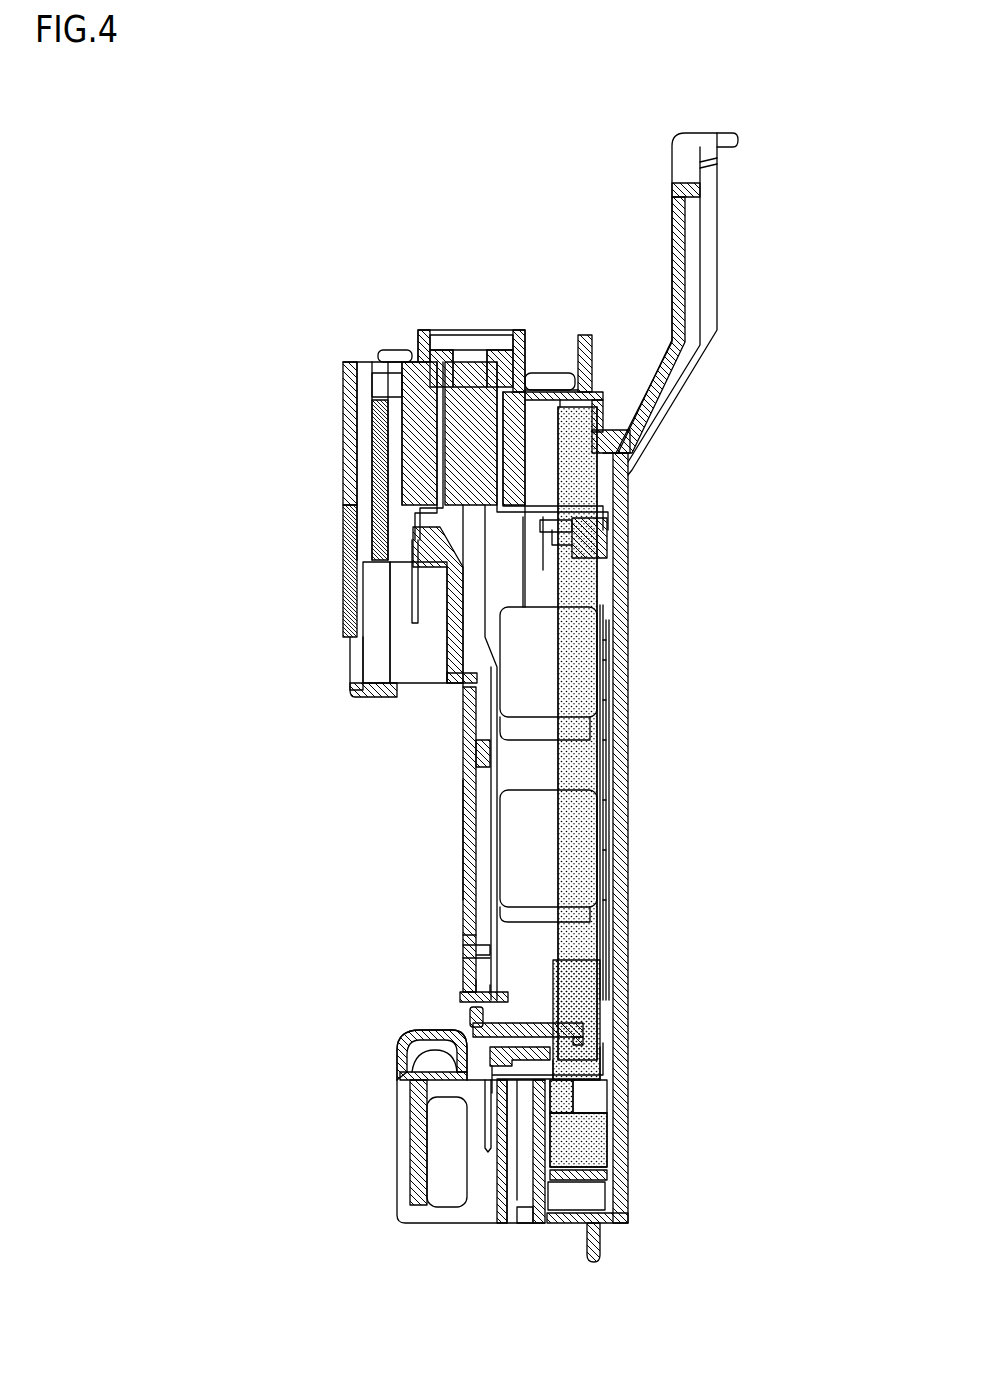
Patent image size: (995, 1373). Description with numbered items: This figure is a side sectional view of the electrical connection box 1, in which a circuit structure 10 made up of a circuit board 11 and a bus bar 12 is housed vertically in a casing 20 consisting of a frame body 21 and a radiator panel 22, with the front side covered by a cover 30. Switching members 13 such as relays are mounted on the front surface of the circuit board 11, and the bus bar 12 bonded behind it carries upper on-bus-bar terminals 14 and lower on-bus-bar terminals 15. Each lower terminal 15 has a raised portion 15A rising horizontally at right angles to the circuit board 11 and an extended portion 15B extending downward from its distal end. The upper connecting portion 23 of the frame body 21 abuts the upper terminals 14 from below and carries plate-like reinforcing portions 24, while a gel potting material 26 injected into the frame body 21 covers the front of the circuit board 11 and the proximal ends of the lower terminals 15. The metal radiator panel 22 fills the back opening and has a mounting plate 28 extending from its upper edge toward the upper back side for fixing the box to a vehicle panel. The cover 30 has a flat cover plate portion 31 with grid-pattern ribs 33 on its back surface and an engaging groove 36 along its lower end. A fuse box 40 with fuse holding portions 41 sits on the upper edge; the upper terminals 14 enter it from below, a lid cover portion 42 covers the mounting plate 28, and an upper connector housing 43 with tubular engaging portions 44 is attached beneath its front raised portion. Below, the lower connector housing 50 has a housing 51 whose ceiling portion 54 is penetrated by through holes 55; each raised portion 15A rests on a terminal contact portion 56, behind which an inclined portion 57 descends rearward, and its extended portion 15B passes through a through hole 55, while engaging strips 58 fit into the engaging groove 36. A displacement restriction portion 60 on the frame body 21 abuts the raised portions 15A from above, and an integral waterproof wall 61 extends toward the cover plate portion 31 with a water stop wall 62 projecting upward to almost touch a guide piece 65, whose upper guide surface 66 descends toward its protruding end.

The electrical connection box 1 is at (305, 162).
The circuit structure 10 is at (550, 733).
The circuit board 11 is at (610, 772).
The bus bar 12 is at (612, 815).
The switching members 13 is at (540, 860).
The upper on-bus-bar terminals 14 is at (545, 515).
The lower on-bus-bar terminals 15 is at (647, 1065).
The raised portion 15A is at (570, 1085).
The extended portion 15B is at (560, 1140).
The casing 20 is at (652, 1216).
The frame body 21 is at (600, 1250).
The radiator panel 22 is at (617, 1197).
The upper connecting portion 23 is at (540, 548).
The reinforcing portions 24 is at (612, 578).
The potting material 26 is at (580, 950).
The mounting plate 28 is at (700, 306).
The cover 30 is at (462, 745).
The cover plate portion 31 is at (465, 841).
The ribs 33 is at (477, 950).
The engaging groove 36 is at (425, 1070).
The fuse box 40 is at (412, 385).
The fuse holding portions 41 is at (490, 385).
The lid cover portion 42 is at (676, 304).
The upper connector housing 43 is at (345, 575).
The tubular engaging portions 44 is at (360, 694).
The lower connector housing 50 is at (410, 1176).
The housing 51 is at (515, 1207).
The ceiling portion 54 is at (435, 1082).
The through holes 55 is at (482, 1090).
The terminal contact portion 56 is at (530, 1097).
The inclined portion 57 is at (485, 1135).
The engaging strips 58 is at (470, 1018).
The displacement restriction portion 60 is at (518, 1010).
The waterproof wall 61 is at (505, 1043).
The water stop wall 62 is at (478, 1012).
The guide piece 65 is at (480, 998).
The guide surface 66 is at (495, 1000).